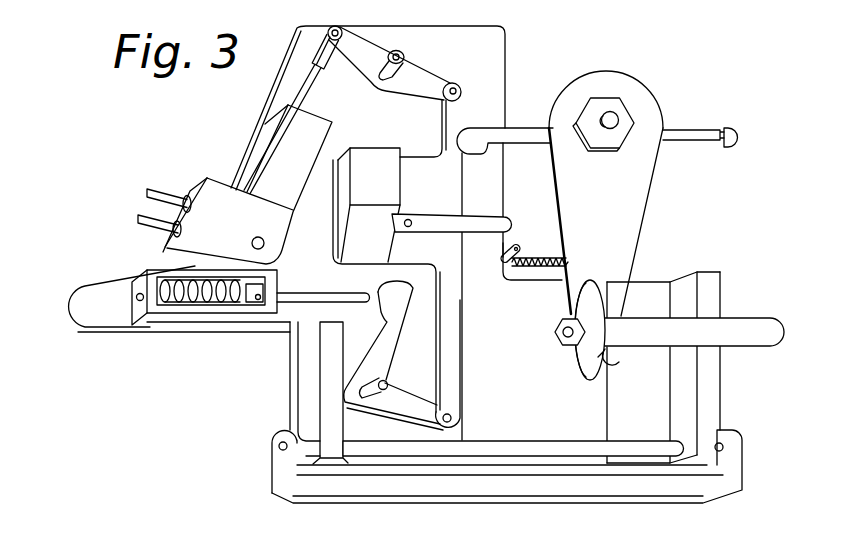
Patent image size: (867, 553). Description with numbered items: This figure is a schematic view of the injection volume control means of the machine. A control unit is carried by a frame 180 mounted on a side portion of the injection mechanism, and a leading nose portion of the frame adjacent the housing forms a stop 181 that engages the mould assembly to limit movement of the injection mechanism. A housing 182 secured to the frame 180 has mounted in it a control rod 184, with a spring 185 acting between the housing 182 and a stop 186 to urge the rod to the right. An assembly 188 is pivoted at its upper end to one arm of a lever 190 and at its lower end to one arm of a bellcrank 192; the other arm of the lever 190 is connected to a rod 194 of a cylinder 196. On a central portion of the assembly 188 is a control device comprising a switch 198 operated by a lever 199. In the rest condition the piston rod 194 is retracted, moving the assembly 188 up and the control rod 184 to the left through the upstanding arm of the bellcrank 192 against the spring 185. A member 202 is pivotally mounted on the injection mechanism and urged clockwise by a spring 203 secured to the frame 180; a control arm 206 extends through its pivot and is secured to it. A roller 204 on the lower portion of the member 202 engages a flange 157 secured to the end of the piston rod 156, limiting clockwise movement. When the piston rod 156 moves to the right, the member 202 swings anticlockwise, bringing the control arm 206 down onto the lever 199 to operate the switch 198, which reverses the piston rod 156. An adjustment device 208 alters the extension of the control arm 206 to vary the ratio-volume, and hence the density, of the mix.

The piston rod 156 is at (752, 327).
The flange 157 is at (585, 368).
The frame 180 is at (657, 418).
The stop 181 is at (63, 297).
The housing 182 is at (182, 333).
The control rod 184 is at (278, 333).
The spring 185 is at (173, 297).
The stop 186 is at (278, 286).
The assembly 188 is at (460, 175).
The lever 190 is at (418, 78).
The bellcrank 192 is at (405, 405).
The piston rod of cylinder 194 is at (303, 90).
The cylinder 196 is at (267, 163).
The switch 198 is at (373, 156).
The lever 199 is at (478, 229).
The member 202 is at (641, 201).
The spring 203 is at (540, 258).
The roller 204 is at (616, 364).
The control arm 206 is at (520, 131).
The adjustment device 208 is at (733, 128).